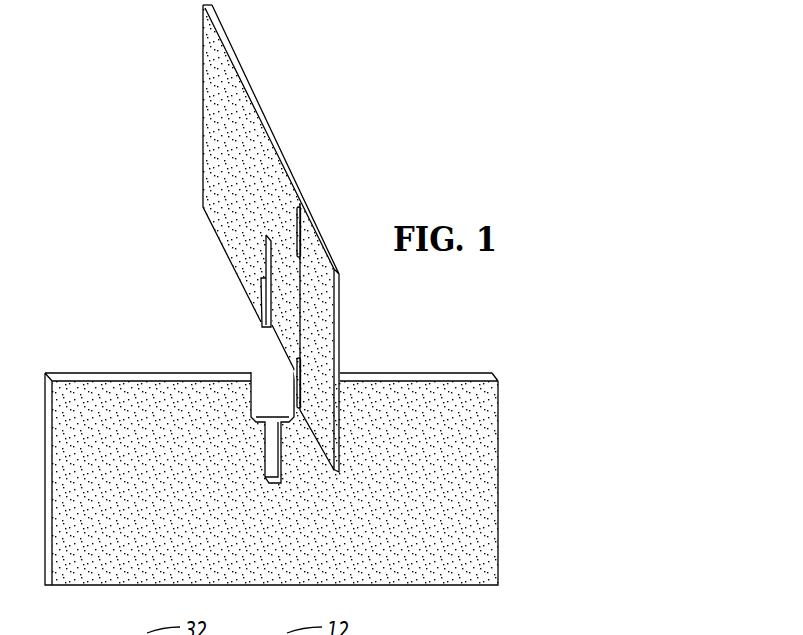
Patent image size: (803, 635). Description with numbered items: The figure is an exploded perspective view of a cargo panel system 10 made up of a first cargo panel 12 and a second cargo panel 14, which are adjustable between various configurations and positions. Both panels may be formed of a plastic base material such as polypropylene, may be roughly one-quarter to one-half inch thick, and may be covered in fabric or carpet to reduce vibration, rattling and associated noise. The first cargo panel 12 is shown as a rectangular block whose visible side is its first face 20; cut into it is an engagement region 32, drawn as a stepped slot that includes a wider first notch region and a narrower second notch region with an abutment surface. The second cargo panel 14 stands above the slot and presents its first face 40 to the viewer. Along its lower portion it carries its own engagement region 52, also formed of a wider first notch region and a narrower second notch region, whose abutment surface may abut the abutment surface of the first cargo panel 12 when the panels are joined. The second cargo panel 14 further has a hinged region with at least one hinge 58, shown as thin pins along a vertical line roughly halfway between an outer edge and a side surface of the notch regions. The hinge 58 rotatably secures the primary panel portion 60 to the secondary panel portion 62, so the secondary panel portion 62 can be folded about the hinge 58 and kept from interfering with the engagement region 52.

The cargo panel system 10 is at (276, 238).
The first cargo panel 12 is at (408, 373).
The second cargo panel 14 is at (262, 106).
The first face 20 is at (117, 412).
The engagement region 32 is at (271, 393).
The first face 40 is at (222, 167).
The engagement region 52 is at (257, 341).
The hinge 58 is at (298, 225).
The primary panel portion 60 is at (220, 77).
The secondary panel portion 62 is at (316, 287).